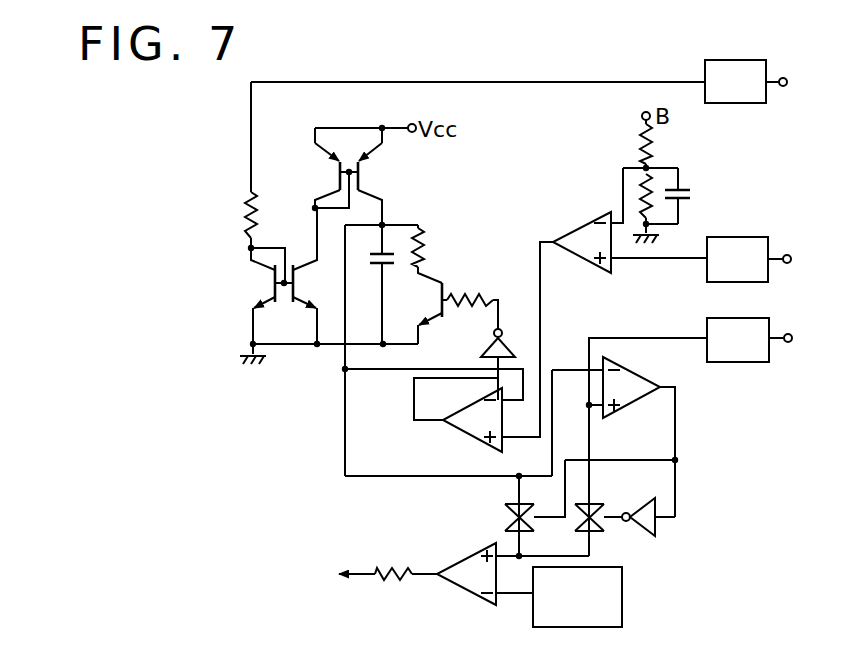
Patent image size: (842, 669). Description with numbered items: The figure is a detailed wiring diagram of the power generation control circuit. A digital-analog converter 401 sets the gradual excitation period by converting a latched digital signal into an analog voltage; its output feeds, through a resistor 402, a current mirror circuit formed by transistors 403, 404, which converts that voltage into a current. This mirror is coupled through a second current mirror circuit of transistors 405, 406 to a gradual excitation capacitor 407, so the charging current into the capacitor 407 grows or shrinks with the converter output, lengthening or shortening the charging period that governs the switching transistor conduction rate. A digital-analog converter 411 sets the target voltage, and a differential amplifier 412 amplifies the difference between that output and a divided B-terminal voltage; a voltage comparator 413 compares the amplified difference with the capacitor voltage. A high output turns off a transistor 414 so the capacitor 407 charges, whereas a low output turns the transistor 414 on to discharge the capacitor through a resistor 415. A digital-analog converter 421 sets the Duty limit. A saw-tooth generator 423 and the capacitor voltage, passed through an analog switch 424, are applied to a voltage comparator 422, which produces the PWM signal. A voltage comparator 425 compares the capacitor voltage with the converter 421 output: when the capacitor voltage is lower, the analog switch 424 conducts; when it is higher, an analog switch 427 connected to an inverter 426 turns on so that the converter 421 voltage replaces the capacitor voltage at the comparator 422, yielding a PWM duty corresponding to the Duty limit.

The digital-analog converter 401 is at (737, 60).
The resistor 402 is at (258, 216).
The transistor 403 is at (266, 300).
The transistor 404 is at (312, 262).
The transistor 405 is at (320, 158).
The transistor 406 is at (378, 188).
The gradual excitation capacitor 407 is at (388, 267).
The digital-analog converter 411 is at (730, 237).
The differential amplifier 412 is at (588, 265).
The voltage comparator 413 is at (465, 435).
The transistor 414 is at (445, 290).
The resistor 415 is at (421, 252).
The digital-analog converter 421 is at (730, 318).
The voltage comparator 422 is at (466, 590).
The saw-tooth generator 423 is at (622, 606).
The analog switch 424 is at (504, 514).
The voltage comparator 425 is at (632, 405).
The inverter 426 is at (645, 528).
The analog switch 427 is at (598, 503).